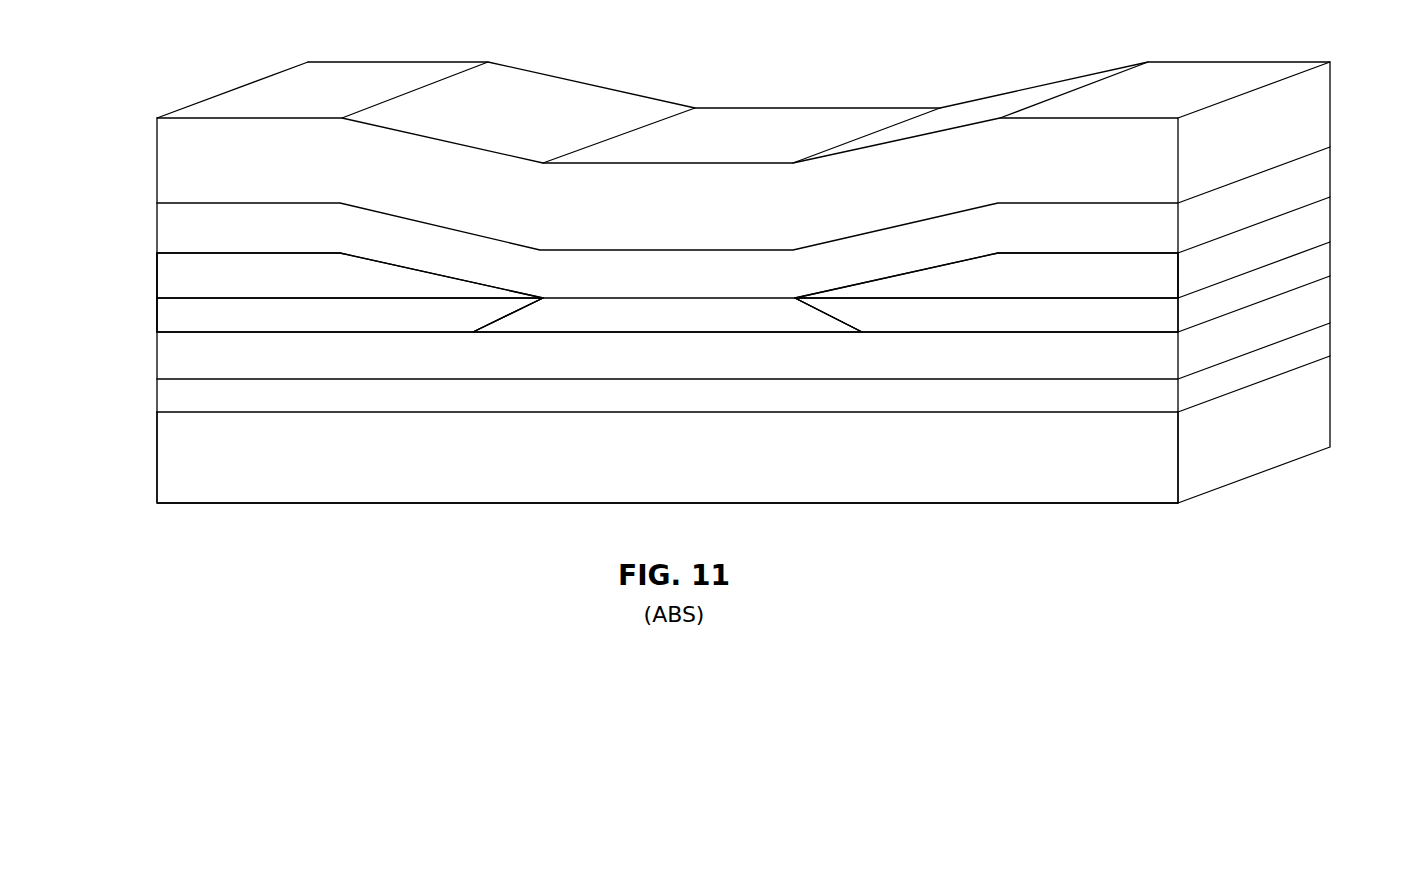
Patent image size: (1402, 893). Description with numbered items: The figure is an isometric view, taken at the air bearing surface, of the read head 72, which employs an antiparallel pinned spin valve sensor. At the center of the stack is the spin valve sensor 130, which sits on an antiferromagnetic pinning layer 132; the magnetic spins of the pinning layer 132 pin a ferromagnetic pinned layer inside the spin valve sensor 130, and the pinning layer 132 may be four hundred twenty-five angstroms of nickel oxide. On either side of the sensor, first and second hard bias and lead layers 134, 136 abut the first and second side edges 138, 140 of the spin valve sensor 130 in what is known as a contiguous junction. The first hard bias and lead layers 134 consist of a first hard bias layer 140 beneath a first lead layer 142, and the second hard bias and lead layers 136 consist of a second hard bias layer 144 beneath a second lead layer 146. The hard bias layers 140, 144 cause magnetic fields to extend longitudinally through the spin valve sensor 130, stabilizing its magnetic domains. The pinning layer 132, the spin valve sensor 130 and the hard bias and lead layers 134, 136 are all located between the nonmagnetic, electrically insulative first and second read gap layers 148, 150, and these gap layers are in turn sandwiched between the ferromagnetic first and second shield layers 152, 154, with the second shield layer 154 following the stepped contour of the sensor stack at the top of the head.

The read head 72 is at (815, 79).
The second shield layer 154 is at (598, 97).
The second read gap layer 150 is at (405, 233).
The spin valve sensor 130 is at (578, 299).
The first lead layer 142 is at (200, 266).
The second lead layer 146 is at (1128, 266).
The first hard bias layer 140 is at (200, 316).
The first side edge 138 is at (495, 318).
The second hard bias layer 144 is at (1127, 318).
The antiferromagnetic pinning layer 132 is at (863, 360).
The first read gap layer 148 is at (444, 399).
The first shield layer 152 is at (330, 483).
The first hard bias and lead layers 134 is at (150, 253).
The second hard bias and lead layers 136 is at (1337, 197).